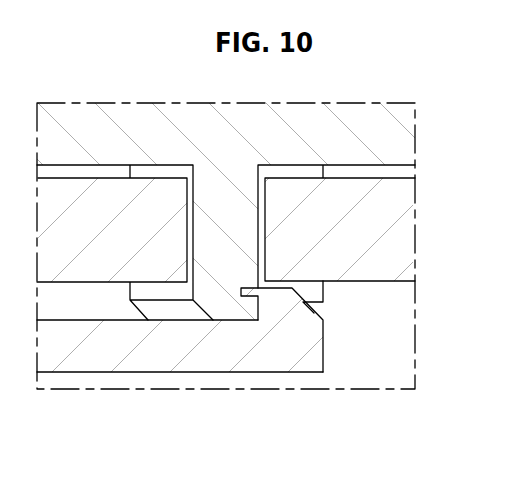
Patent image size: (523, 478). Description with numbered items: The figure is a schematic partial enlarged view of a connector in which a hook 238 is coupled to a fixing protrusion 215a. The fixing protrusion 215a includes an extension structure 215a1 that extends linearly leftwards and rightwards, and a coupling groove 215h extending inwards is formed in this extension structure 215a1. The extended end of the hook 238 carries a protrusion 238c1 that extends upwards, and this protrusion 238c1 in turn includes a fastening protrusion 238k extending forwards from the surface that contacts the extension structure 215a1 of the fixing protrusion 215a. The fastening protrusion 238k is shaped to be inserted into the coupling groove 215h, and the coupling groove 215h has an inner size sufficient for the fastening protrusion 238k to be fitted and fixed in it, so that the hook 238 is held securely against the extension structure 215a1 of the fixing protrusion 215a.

The hook 238 is at (140, 350).
The fixing protrusion 215a is at (263, 218).
The extension structure 215a1 is at (223, 307).
The coupling groove 215h is at (242, 292).
The protrusion 238c1 is at (300, 291).
The fastening protrusion 238k is at (240, 298).